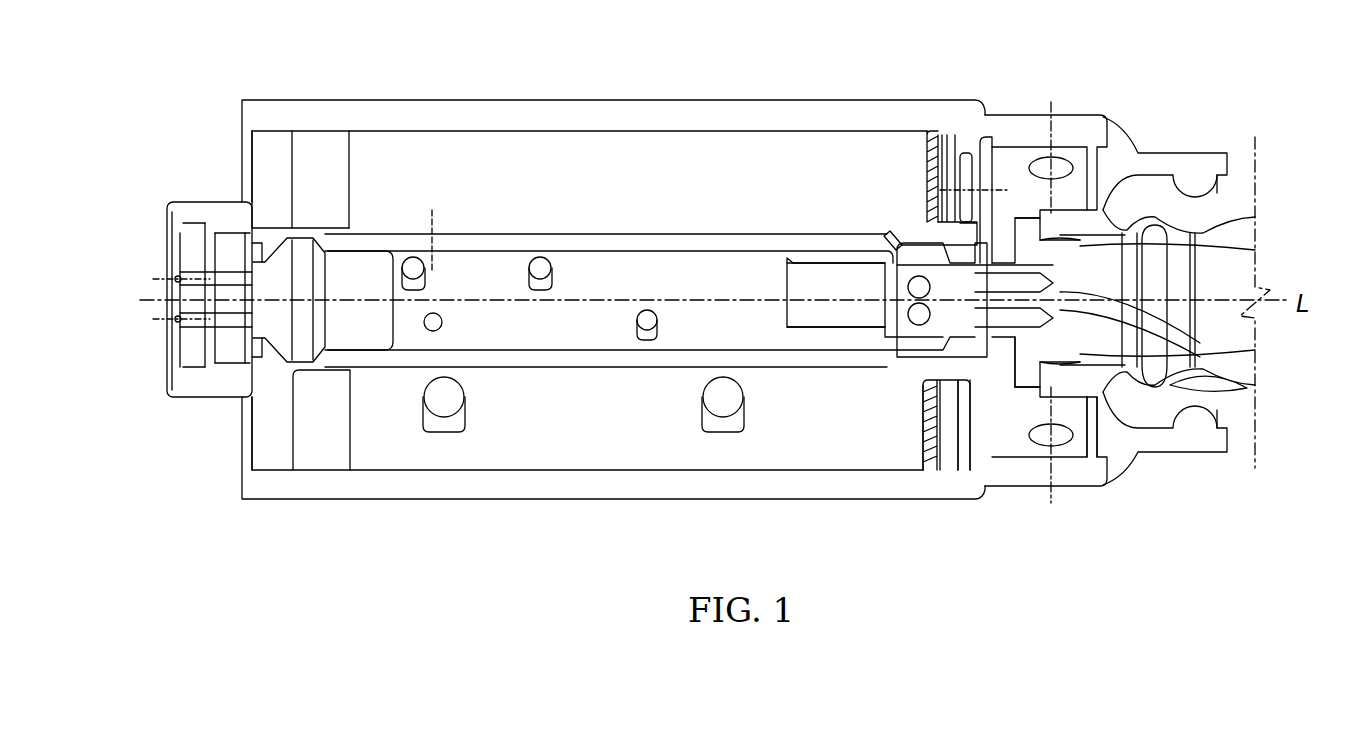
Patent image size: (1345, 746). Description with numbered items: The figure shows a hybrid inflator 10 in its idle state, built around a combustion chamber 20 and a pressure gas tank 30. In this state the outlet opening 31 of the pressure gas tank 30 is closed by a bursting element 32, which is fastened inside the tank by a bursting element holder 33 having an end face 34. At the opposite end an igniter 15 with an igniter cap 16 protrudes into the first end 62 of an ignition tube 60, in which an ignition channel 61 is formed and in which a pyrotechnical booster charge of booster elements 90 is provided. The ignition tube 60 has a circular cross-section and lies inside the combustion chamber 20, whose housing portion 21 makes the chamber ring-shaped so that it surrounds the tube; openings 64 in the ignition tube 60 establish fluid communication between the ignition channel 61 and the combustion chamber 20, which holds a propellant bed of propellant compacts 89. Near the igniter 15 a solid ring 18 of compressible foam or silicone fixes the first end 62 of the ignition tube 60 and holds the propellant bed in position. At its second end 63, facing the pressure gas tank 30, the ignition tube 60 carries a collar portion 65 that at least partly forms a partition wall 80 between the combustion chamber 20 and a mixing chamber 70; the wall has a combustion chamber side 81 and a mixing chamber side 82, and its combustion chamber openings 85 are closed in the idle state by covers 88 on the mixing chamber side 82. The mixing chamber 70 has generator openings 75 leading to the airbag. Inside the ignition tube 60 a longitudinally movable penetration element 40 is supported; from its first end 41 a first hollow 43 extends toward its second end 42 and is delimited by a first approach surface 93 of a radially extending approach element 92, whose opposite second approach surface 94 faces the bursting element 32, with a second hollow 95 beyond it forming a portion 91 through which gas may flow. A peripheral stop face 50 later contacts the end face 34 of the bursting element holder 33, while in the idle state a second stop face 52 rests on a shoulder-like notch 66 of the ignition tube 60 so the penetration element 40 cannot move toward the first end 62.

The hybrid inflator 10 is at (877, 56).
The igniter 15 is at (224, 374).
The igniter cap 16 is at (353, 298).
The solid ring 18 is at (318, 140).
The combustion chamber 20 is at (588, 183).
The housing portion 21 is at (483, 117).
The pressure gas tank 30 is at (1247, 195).
The outlet opening 31 is at (1110, 450).
The bursting element 32 is at (1193, 347).
The bursting element holder 33 is at (1030, 243).
The end face 34 is at (1018, 470).
The penetration element 40 is at (917, 360).
The first end 41 is at (787, 330).
The second end 42 is at (1240, 388).
The first hollow 43 is at (837, 282).
The stop face 50 is at (927, 213).
The second stop face 52 is at (888, 360).
The ignition tube 60 is at (648, 242).
The ignition channel 61 is at (565, 320).
The first end 62 is at (332, 360).
The second end 63 is at (1193, 246).
The openings 64 is at (433, 218).
The collar portion 65 is at (962, 450).
The notch 66 is at (887, 233).
The mixing chamber 70 is at (1016, 178).
The generator openings 75 is at (1060, 127).
The partition wall 80 is at (973, 147).
The combustion chamber side 81 is at (925, 448).
The mixing chamber side 82 is at (1000, 137).
The combustion chamber openings 85 is at (930, 132).
The covers 88 is at (1042, 150).
The propellant compacts 89 is at (603, 440).
The booster elements 90 is at (535, 259).
The portion through which gas may flow 91 is at (988, 423).
The approach element 92 is at (880, 352).
The first approach surface 93 is at (905, 312).
The second approach surface 94 is at (900, 240).
The second hollow 95 is at (1160, 420).